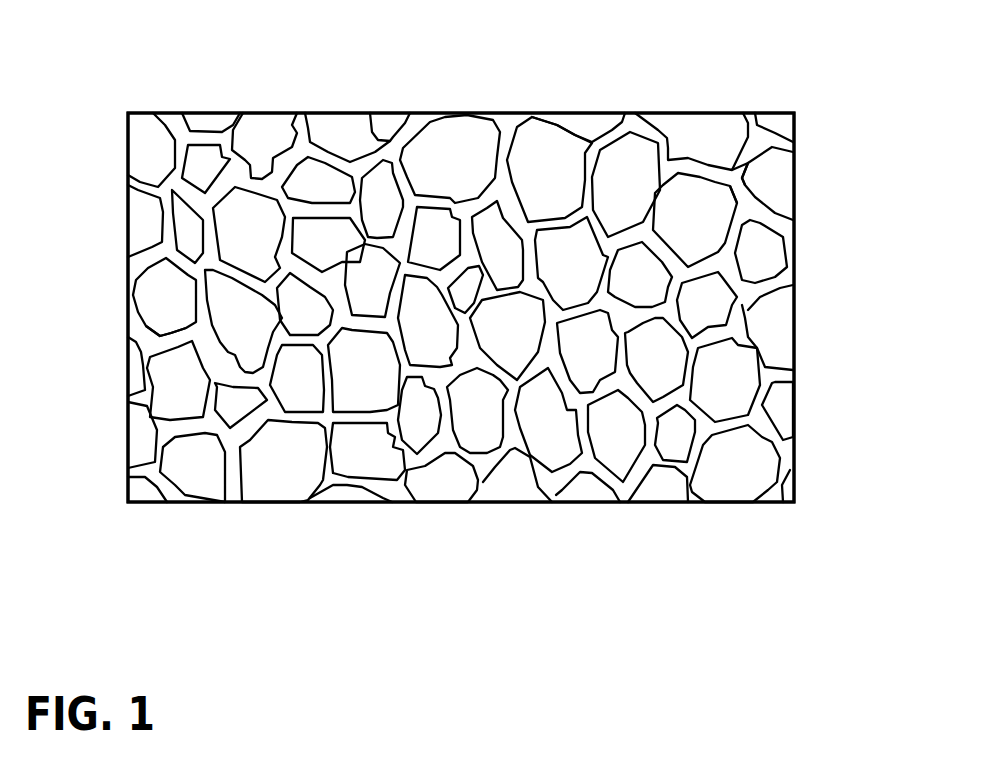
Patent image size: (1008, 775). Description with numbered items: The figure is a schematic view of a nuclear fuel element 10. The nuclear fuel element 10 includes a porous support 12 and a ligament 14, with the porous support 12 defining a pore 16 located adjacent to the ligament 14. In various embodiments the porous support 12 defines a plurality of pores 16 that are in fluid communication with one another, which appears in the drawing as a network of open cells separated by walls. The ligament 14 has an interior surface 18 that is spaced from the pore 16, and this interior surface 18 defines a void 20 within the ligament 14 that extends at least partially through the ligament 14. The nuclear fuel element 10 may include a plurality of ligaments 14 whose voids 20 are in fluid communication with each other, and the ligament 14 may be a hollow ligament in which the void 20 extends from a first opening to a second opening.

The nuclear fuel element 10 is at (600, 79).
The porous support 12 is at (679, 111).
The ligament 14 is at (748, 184).
The pore 16 is at (453, 162).
The interior surface 18 is at (736, 198).
The void 20 is at (770, 222).